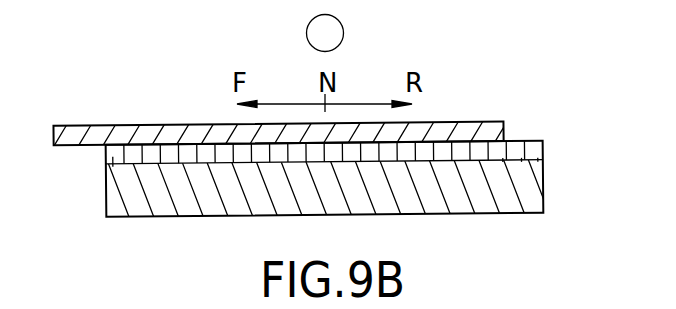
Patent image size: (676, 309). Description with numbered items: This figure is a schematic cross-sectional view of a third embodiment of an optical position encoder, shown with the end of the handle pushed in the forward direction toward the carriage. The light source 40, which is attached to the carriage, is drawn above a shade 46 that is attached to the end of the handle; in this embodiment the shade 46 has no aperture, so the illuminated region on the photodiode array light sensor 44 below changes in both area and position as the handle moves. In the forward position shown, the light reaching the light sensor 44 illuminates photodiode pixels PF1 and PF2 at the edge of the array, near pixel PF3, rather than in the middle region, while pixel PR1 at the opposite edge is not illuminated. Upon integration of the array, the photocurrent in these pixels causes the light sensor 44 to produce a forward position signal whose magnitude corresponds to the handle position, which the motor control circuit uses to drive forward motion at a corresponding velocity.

The light source 40 is at (333, 30).
The shade 46 is at (500, 124).
The photodiode array light sensor 44 is at (347, 207).
The photodiode pixel PR1 is at (113, 165).
The photodiode pixel PF1 is at (538, 164).
The photodiode pixel PF2 is at (522, 164).
The photodiode pixel PF3 is at (503, 164).